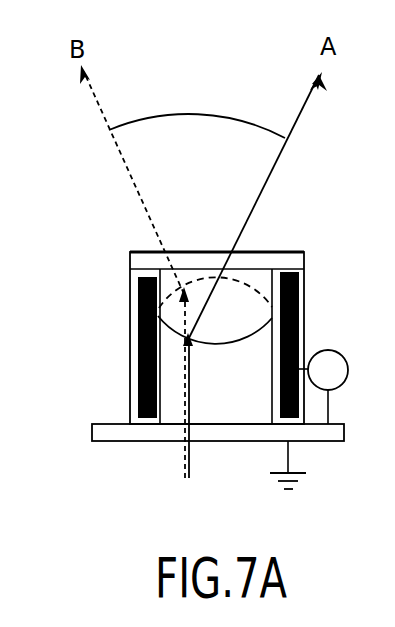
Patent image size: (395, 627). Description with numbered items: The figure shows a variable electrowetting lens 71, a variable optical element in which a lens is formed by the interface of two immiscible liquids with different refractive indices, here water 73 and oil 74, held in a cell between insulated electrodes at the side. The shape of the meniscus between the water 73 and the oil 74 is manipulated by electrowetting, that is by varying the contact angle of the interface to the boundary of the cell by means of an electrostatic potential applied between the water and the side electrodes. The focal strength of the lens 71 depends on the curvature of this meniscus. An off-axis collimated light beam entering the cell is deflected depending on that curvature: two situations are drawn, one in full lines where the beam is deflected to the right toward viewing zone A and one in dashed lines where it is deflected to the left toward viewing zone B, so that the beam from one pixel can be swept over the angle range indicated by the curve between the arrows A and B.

The variable electrowetting lens 71 is at (100, 345).
The water 73 is at (216, 382).
The oil 74 is at (215, 310).